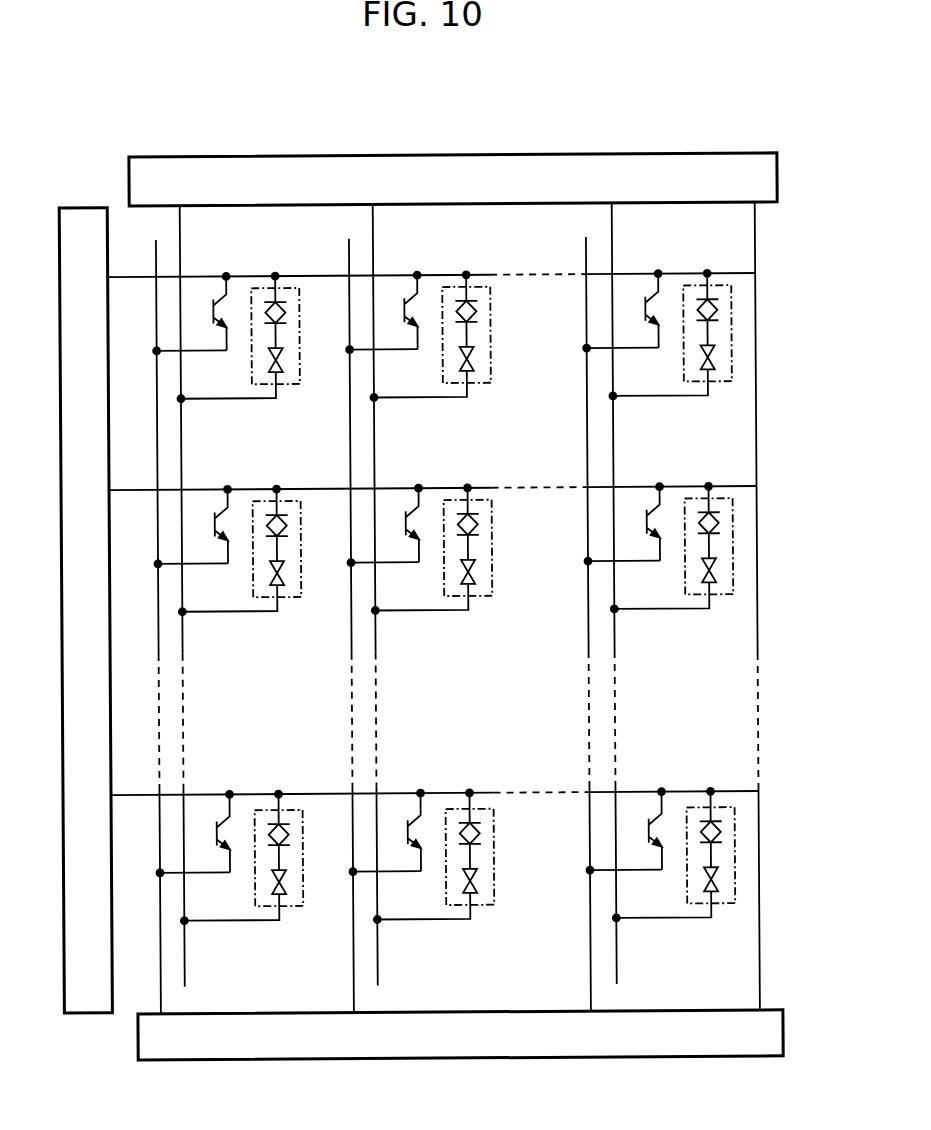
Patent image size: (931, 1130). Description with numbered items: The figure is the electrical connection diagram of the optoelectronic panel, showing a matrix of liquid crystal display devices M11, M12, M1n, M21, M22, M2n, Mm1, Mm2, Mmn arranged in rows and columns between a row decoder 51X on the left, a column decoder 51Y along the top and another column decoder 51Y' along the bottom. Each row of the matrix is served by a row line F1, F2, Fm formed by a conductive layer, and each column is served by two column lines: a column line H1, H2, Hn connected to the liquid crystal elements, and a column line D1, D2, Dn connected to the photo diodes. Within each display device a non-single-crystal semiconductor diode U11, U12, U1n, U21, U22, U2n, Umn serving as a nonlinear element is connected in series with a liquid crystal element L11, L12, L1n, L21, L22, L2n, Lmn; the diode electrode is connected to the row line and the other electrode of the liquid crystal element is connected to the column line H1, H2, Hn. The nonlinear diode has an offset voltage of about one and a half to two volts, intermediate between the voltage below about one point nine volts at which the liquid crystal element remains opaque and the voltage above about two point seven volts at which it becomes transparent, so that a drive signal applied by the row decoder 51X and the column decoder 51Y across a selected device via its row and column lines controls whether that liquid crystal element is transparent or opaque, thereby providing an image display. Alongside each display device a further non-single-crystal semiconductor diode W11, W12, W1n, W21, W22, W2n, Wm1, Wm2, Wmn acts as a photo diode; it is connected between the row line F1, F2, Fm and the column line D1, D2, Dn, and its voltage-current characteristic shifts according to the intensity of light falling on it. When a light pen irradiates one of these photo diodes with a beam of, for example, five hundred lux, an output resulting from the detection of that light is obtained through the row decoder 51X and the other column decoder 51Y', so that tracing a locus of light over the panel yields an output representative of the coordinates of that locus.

The row decoder 51X is at (86, 208).
The column decoder 51Y is at (453, 162).
The another column decoder 51Y' is at (461, 1052).
The row line F1 is at (326, 275).
The row line F2 is at (315, 488).
The row line Fm is at (329, 793).
The column line D1 is at (158, 462).
The column line D2 is at (351, 456).
The column line Dn is at (588, 447).
The column line H1 is at (182, 436).
The column line H2 is at (375, 450).
The column line Hn is at (614, 441).
The photo diode W11 is at (215, 311).
The photo diode W12 is at (406, 311).
The photo diode W1n is at (647, 311).
The photo diode W21 is at (215, 535).
The photo diode W22 is at (406, 535).
The photo diode W2n is at (647, 535).
The photo diode Wm1 is at (215, 844).
The photo diode Wm2 is at (406, 844).
The photo diode Wmn is at (647, 844).
The non-single-crystal semiconductor diode U11 is at (287, 311).
The non-single-crystal semiconductor diode U12 is at (478, 311).
The non-single-crystal semiconductor diode U1n is at (719, 311).
The non-single-crystal semiconductor diode U21 is at (287, 524).
The non-single-crystal semiconductor diode U22 is at (478, 524).
The non-single-crystal semiconductor diode U2n is at (719, 524).
The non-single-crystal semiconductor diode Umn is at (719, 833).
The liquid crystal element L11 is at (281, 363).
The liquid crystal element L12 is at (472, 363).
The liquid crystal element L1n is at (713, 363).
The liquid crystal element L21 is at (281, 576).
The liquid crystal element L22 is at (472, 576).
The liquid crystal element L2n is at (713, 576).
The liquid crystal element Lmn is at (713, 885).
The liquid crystal display device M11 is at (249, 330).
The liquid crystal display device M12 is at (444, 331).
The liquid crystal display device M1n is at (695, 328).
The liquid crystal display device M21 is at (252, 570).
The liquid crystal display device M22 is at (448, 567).
The liquid crystal display device M2n is at (697, 564).
The liquid crystal display device Mm1 is at (242, 875).
The liquid crystal display device Mm2 is at (431, 873).
The liquid crystal display device Mmn is at (702, 871).